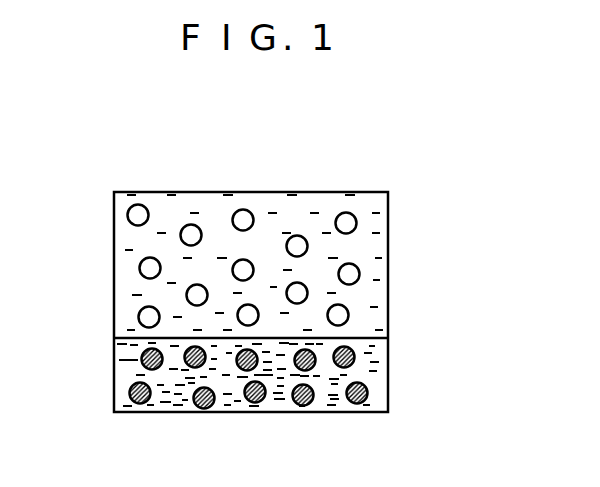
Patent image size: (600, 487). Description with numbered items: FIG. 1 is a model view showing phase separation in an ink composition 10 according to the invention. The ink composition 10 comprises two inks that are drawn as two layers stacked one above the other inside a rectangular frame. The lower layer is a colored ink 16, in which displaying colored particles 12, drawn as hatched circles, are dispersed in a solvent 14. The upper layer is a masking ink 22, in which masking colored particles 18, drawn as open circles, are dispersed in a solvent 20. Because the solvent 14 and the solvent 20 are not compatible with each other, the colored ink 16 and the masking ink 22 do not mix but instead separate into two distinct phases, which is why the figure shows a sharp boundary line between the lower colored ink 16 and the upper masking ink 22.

The ink composition 10 is at (110, 152).
The displaying colored particles 12 is at (370, 397).
The solvent 14 is at (388, 361).
The colored ink 16 is at (452, 333).
The masking colored particles 18 is at (308, 294).
The solvent 20 is at (350, 248).
The masking ink 22 is at (452, 228).